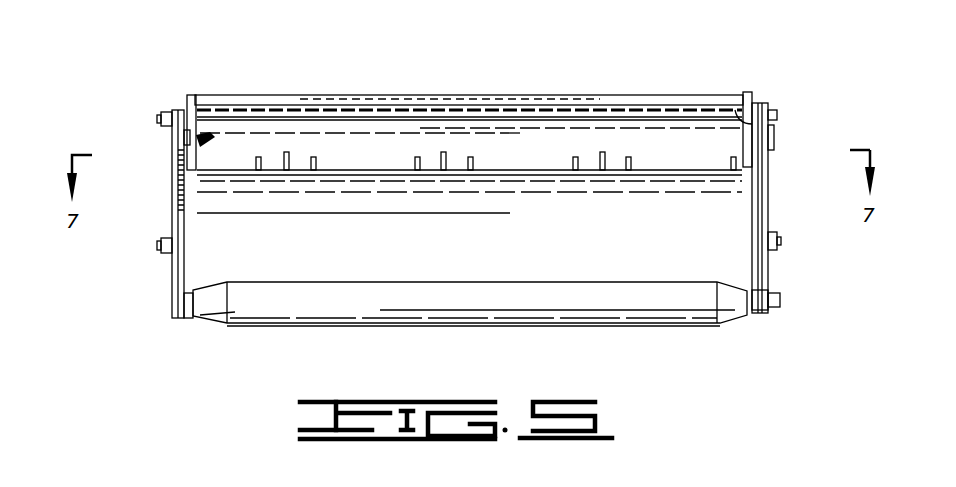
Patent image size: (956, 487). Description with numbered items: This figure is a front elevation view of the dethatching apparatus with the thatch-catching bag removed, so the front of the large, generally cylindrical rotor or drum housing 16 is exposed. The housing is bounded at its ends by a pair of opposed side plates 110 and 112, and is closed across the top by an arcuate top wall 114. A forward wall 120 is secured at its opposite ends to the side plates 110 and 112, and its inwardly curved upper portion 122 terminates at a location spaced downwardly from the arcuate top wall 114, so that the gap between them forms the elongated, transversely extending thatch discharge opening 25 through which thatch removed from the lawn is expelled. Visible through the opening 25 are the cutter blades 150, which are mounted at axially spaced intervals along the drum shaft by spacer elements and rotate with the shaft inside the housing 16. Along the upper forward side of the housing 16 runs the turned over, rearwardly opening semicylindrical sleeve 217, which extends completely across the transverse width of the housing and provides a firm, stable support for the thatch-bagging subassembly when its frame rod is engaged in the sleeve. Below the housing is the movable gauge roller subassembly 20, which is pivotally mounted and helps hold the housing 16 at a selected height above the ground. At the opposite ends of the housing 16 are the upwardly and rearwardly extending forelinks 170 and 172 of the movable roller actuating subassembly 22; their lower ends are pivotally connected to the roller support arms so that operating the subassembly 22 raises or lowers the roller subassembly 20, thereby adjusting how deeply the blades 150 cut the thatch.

The rotor or drum housing 16 is at (205, 145).
The movable gauge roller subassembly 20 is at (667, 327).
The movable roller actuating subassembly 22 is at (262, 305).
The thatch discharge opening 25 is at (350, 147).
The side plate 110 is at (740, 118).
The side plate 112 is at (222, 118).
The arcuate top wall 114 is at (447, 112).
The forward wall 120 is at (508, 270).
The inwardly curved upper portion 122 is at (698, 212).
The cutter blades 150 is at (598, 150).
The forelink 170 is at (173, 210).
The forelink 172 is at (765, 187).
The semicylindrical sleeve 217 is at (527, 95).